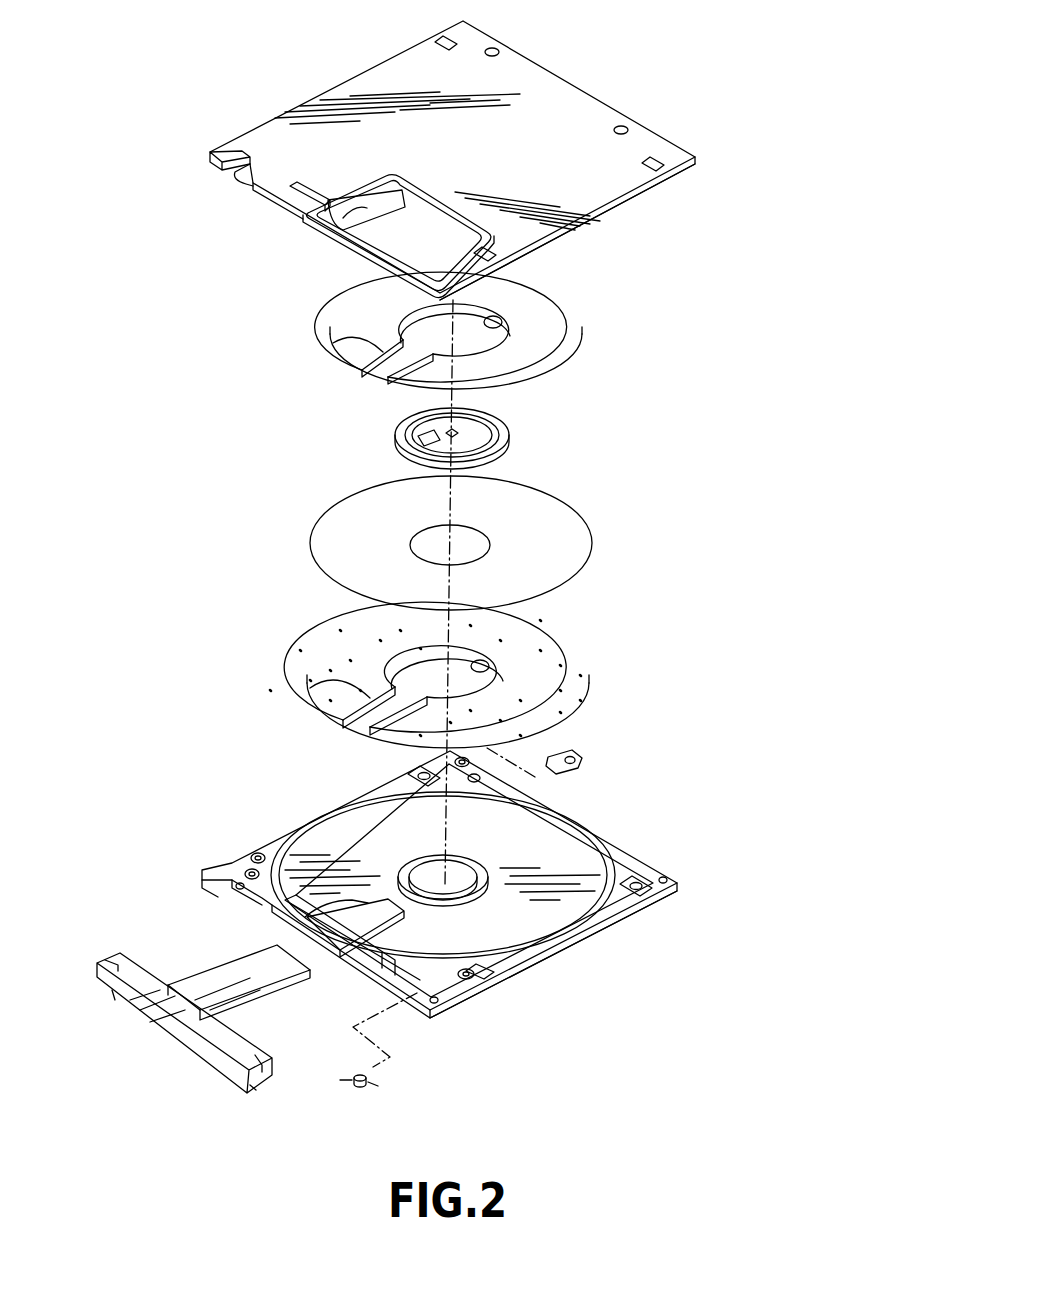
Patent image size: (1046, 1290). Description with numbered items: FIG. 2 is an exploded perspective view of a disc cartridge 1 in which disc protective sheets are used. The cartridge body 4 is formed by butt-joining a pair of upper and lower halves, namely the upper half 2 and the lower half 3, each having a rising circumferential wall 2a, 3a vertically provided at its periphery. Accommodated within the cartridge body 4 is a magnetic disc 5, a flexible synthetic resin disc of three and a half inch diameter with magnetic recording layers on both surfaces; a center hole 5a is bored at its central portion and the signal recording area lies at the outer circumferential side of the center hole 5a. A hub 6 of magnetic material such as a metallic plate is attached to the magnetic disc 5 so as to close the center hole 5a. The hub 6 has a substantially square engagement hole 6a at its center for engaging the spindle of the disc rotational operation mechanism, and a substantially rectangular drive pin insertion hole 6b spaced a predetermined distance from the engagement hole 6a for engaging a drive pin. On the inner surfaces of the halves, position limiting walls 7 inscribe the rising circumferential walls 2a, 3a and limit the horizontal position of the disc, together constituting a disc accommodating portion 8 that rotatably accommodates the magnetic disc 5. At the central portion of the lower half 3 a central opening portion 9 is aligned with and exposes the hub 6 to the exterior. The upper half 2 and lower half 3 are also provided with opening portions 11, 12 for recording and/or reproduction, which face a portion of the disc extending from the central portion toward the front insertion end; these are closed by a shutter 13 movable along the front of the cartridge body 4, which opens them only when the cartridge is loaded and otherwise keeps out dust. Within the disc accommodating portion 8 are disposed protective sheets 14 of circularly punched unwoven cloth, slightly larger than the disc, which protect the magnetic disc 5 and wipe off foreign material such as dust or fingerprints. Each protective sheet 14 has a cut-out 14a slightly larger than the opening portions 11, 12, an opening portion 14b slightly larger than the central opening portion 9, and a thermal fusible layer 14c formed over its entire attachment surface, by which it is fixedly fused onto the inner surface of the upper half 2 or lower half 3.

The disc cartridge 1 is at (752, 118).
The upper half 2 is at (689, 163).
The rising circumferential wall 2a is at (623, 205).
The lower half 3 is at (668, 878).
The rising circumferential wall 3a is at (617, 920).
The cartridge body 4 is at (763, 155).
The magnetic disc 5 is at (558, 518).
The center hole 5a is at (490, 543).
The hub 6 is at (507, 438).
The engagement hole 6a is at (443, 435).
The drive pin insertion hole 6b is at (403, 440).
The position limiting wall 7 is at (605, 852).
The disc accommodating portion 8 is at (342, 835).
The central opening portion 9 is at (457, 866).
The opening portion 11 is at (318, 226).
The opening portion 12 is at (290, 922).
The shutter 13 is at (165, 1028).
The protective sheet 14 is at (558, 344).
The cut-out 14a is at (333, 344).
The opening portion 14b is at (507, 323).
The thermal fusible layer 14c is at (550, 313).